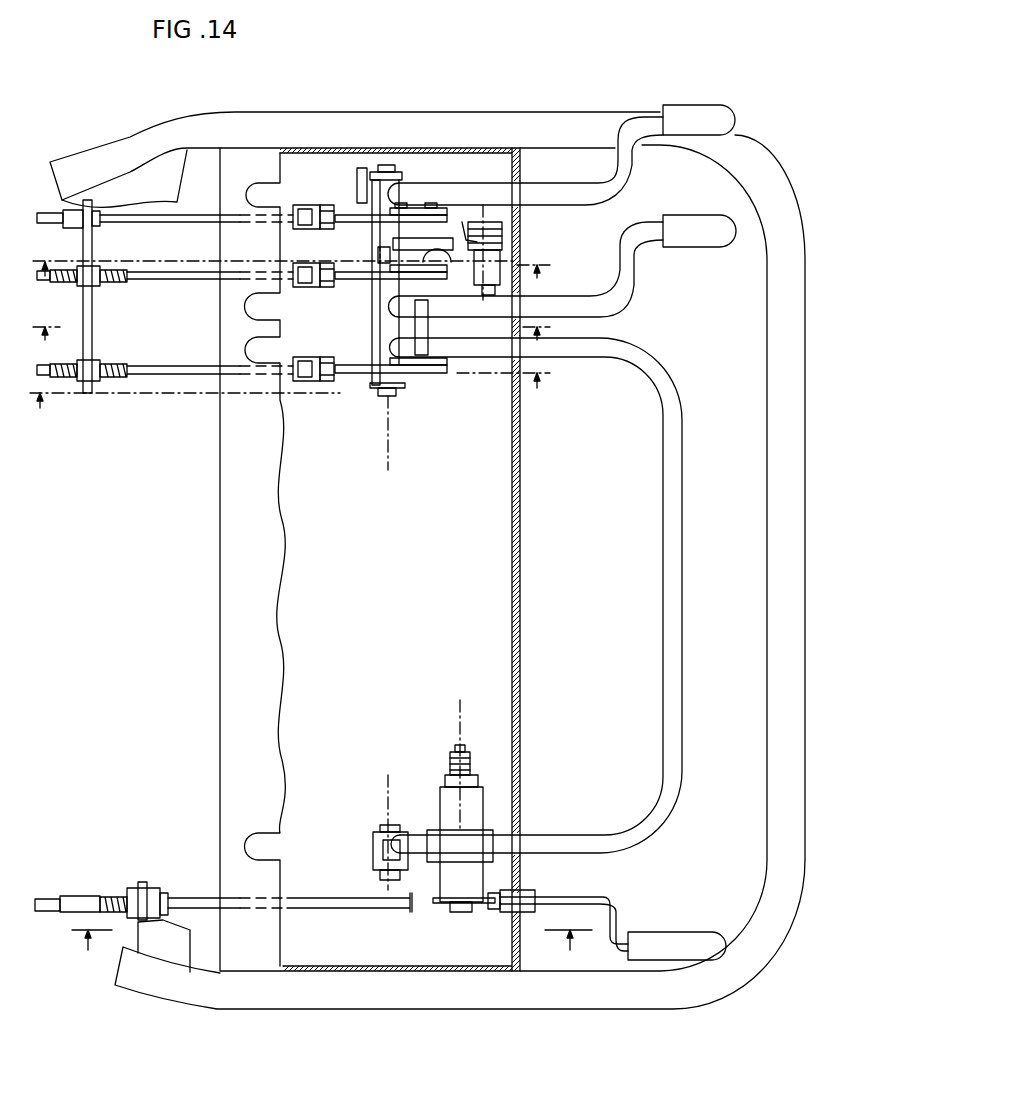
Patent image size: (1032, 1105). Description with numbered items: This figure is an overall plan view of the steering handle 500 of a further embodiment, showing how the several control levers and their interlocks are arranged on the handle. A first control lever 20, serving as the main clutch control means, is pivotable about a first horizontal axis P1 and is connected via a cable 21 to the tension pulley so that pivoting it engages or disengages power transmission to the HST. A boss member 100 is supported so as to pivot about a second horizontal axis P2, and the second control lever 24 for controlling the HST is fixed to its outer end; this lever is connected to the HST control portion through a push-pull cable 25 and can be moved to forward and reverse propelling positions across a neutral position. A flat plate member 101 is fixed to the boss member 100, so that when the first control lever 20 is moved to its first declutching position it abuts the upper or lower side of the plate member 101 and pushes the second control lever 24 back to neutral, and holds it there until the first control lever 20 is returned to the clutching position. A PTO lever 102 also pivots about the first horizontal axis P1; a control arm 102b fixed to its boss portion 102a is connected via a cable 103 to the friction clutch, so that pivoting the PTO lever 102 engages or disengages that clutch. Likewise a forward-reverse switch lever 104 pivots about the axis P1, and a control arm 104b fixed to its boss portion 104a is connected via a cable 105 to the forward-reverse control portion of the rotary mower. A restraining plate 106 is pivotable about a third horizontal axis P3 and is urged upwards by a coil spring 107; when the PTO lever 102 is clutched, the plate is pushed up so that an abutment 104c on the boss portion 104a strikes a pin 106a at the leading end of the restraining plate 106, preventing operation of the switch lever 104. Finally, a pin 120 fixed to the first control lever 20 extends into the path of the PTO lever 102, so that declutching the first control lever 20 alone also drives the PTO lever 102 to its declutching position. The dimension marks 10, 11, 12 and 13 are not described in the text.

The frame 500 is at (770, 490).
The first control lever 20 is at (682, 612).
The forward-reverse switch lever 104 is at (696, 103).
The PTO lever 102 is at (690, 247).
The second control lever 24 is at (613, 910).
The cable 105 is at (152, 222).
The cable 103 is at (160, 281).
The cable 21 is at (167, 374).
The push-pull cable 25 is at (52, 893).
The boss portion 104a is at (363, 222).
The control arm 104b is at (420, 210).
The abutment 104c is at (366, 260).
The boss portion 102a is at (380, 322).
The control arm 102b is at (443, 264).
The restraining plate 106 is at (443, 237).
The pin 106a is at (385, 246).
The coil spring 107 is at (505, 243).
The pin 120 is at (430, 323).
The third horizontal axis P3 is at (483, 240).
The dimension 13 is at (301, 292).
The dimension 12 is at (313, 344).
The dimension 11 is at (296, 410).
The dimension 10 is at (340, 958).
The boss member 100 is at (442, 800).
The flat plate member 101 is at (490, 830).
The second horizontal axis P2 is at (466, 700).
The first horizontal axis P1 is at (388, 475).